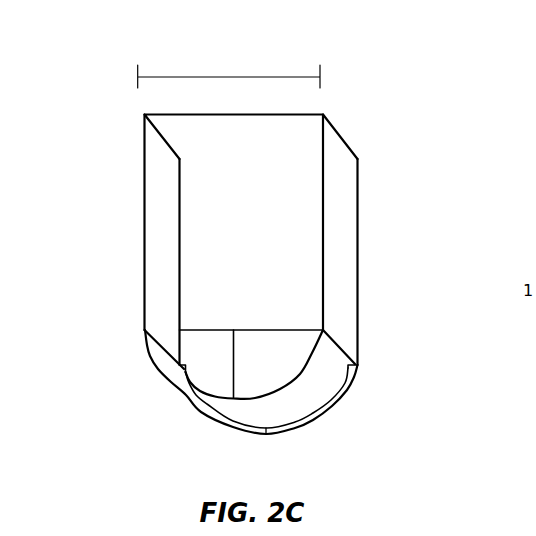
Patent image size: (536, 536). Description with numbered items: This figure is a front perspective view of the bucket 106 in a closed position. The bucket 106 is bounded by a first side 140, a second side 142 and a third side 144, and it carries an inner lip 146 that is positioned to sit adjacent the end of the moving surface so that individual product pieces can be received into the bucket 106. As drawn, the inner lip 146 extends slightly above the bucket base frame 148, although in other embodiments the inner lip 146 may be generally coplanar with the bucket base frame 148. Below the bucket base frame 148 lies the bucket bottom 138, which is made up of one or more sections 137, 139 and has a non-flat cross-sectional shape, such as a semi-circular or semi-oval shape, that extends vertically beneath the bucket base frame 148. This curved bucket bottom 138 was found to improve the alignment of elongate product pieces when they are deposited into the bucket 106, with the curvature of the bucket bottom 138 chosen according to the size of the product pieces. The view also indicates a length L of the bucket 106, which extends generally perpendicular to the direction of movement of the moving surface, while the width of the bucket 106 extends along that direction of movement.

The bucket 106 is at (120, 72).
The bucket bottom section 137 is at (202, 420).
The bucket bottom 138 is at (150, 366).
The bucket bottom section 139 is at (292, 430).
The first side 140 is at (337, 222).
The second side 142 is at (167, 222).
The third side 144 is at (300, 152).
The inner lip 146 is at (355, 372).
The bucket base frame 148 is at (175, 332).